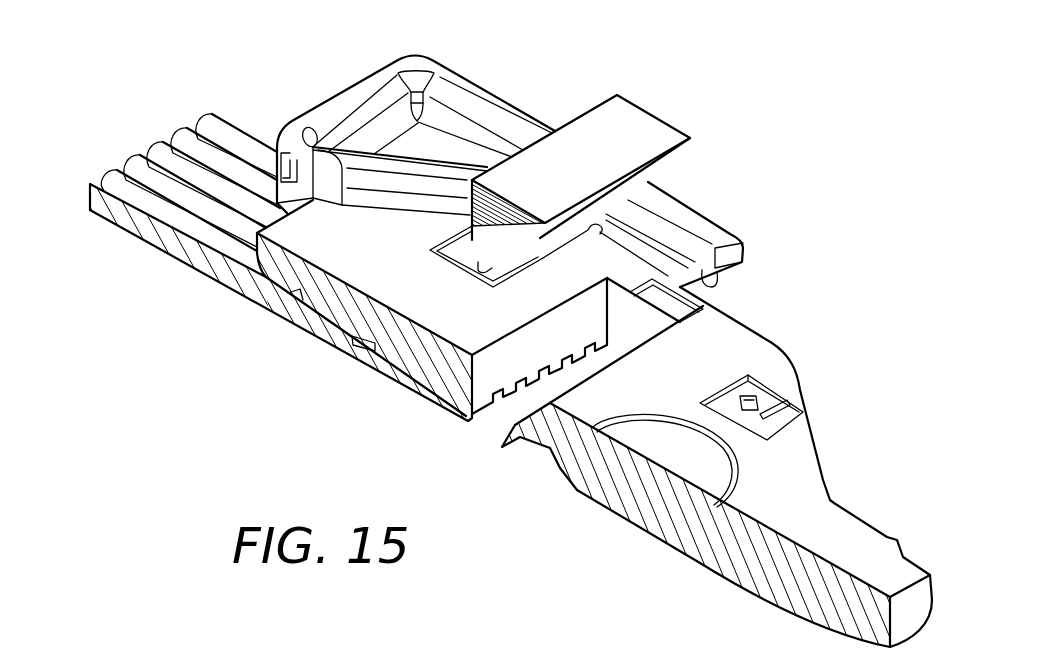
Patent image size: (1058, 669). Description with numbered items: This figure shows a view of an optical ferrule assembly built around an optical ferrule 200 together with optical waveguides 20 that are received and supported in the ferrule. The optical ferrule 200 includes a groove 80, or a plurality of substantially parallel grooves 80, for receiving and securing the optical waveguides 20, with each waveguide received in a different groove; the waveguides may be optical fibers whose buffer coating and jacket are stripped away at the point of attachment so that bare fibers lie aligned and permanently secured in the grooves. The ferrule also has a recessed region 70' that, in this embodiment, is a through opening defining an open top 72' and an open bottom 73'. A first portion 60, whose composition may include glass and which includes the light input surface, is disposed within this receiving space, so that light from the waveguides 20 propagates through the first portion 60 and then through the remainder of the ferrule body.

The optical waveguide 20 is at (193, 248).
The first portion 60 is at (644, 132).
The recessed region 70' is at (416, 225).
The open top 72' is at (472, 402).
The open bottom 73' is at (700, 236).
The groove 80 is at (498, 432).
The optical ferrule 200 is at (778, 348).